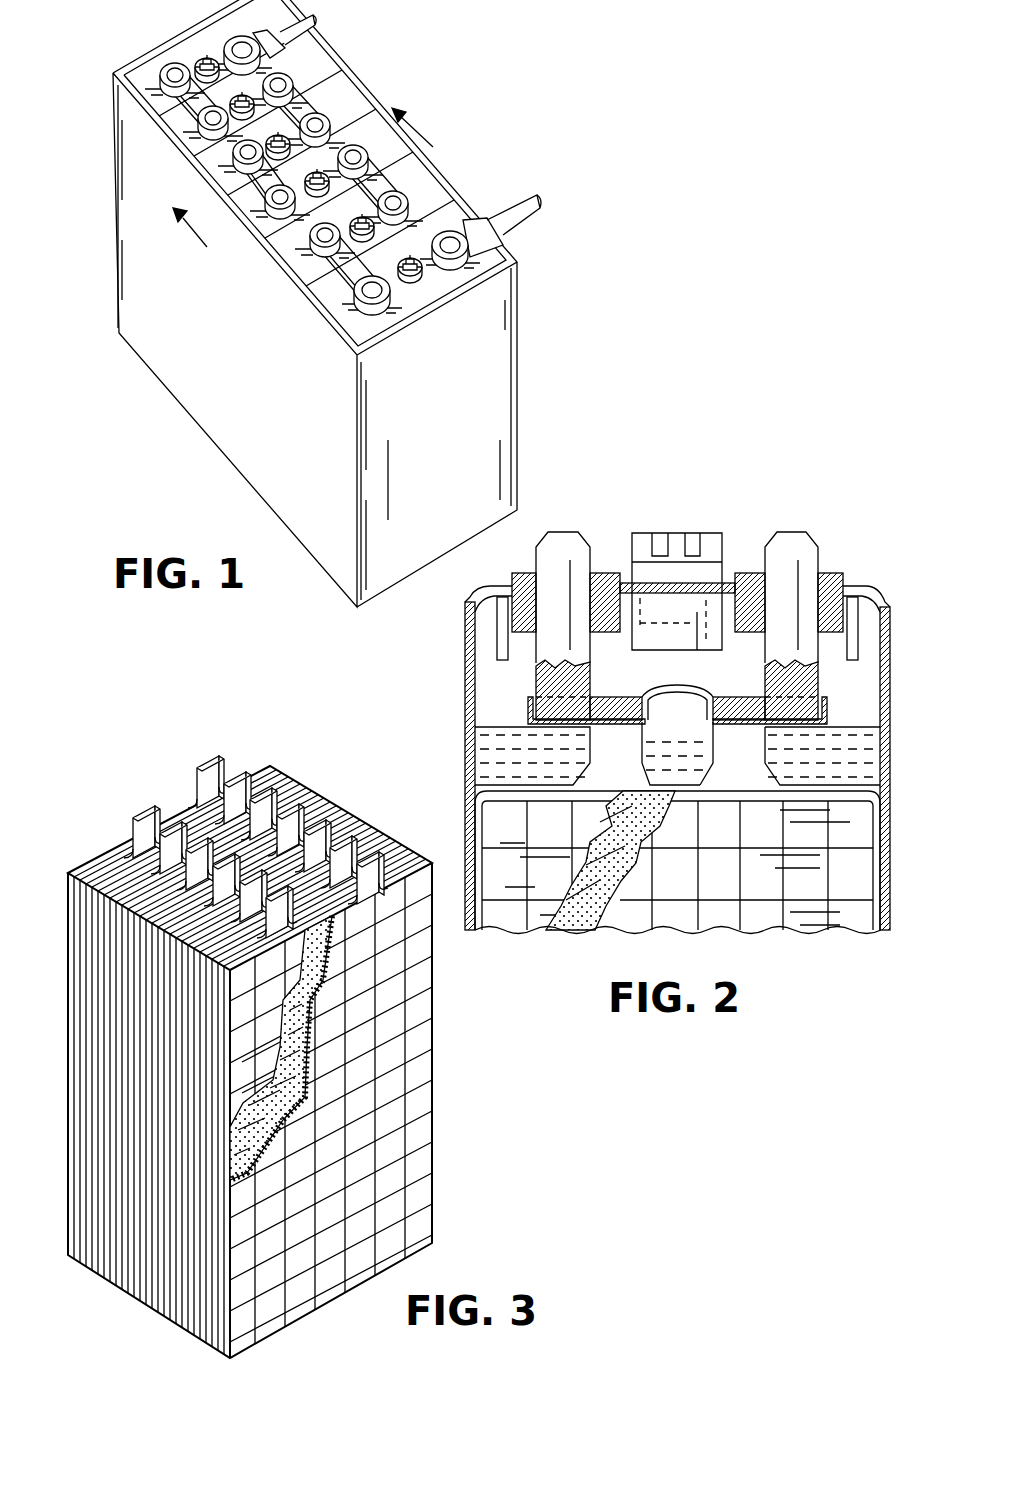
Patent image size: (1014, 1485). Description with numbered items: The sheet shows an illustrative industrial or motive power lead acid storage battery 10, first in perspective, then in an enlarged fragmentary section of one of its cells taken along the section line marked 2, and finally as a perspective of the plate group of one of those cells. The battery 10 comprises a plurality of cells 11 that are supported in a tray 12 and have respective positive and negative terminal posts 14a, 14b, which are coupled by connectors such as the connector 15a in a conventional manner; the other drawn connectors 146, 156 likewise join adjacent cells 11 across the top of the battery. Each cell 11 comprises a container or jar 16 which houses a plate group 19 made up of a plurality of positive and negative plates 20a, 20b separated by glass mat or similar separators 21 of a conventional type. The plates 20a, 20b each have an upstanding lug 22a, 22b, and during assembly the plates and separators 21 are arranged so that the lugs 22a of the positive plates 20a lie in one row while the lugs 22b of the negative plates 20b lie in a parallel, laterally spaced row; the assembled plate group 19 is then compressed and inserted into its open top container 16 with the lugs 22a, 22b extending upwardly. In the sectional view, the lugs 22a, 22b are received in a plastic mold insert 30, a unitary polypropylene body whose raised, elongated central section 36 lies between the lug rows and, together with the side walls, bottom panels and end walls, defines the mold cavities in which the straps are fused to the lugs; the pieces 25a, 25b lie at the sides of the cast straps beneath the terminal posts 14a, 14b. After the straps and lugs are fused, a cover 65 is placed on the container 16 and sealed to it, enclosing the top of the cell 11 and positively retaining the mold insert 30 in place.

In FIG. 1, the battery 10 is at (326, 303).
In FIG. 1, the cells 11 is at (142, 68).
In FIG. 2, the cells 11 is at (436, 660).
In FIG. 1, the tray 12 is at (242, 423).
In FIG. 1, the positive terminal post 14a is at (356, 150).
In FIG. 2, the positive terminal post 14a is at (790, 537).
In FIG. 1, the negative terminal post 14b is at (366, 289).
In FIG. 2, the negative terminal post 14b is at (562, 537).
In FIG. 1, the connector 15a is at (382, 176).
In FIG. 1, the intercell connector 146 is at (287, 190).
In FIG. 1, the intercell connector 156 is at (330, 268).
In FIG. 1, the section line 2- 2 is at (313, 189).
In FIG. 2, the container 16 is at (465, 793).
In FIG. 2, the plate group 19 is at (681, 882).
In FIG. 3, the plate group 19 is at (302, 1030).
In FIG. 2, the positive plates 20a is at (746, 865).
In FIG. 3, the positive plates 20a is at (331, 1110).
In FIG. 2, the negative plates 20b is at (551, 865).
In FIG. 3, the negative plates 20b is at (267, 1005).
In FIG. 2, the separators 21 is at (592, 925).
In FIG. 3, the separators 21 is at (290, 1090).
In FIG. 2, the lugs of the positive plates 22a is at (735, 750).
In FIG. 3, the lugs of the positive plates 22a is at (240, 780).
In FIG. 2, the lugs of the negative plates 22b is at (600, 748).
In FIG. 3, the lugs of the negative plates 22b is at (173, 833).
In FIG. 2, the positive lug liner 25a is at (855, 692).
In FIG. 2, the negative lug liner 25b is at (530, 707).
In FIG. 2, the mold insert 30 is at (677, 684).
In FIG. 2, the raised central section 36 is at (653, 690).
In FIG. 2, the cover 65 is at (856, 590).